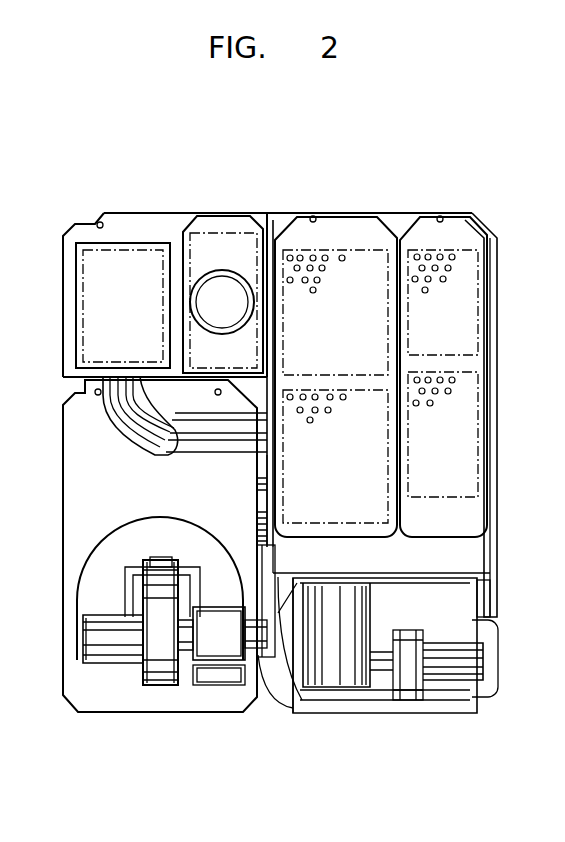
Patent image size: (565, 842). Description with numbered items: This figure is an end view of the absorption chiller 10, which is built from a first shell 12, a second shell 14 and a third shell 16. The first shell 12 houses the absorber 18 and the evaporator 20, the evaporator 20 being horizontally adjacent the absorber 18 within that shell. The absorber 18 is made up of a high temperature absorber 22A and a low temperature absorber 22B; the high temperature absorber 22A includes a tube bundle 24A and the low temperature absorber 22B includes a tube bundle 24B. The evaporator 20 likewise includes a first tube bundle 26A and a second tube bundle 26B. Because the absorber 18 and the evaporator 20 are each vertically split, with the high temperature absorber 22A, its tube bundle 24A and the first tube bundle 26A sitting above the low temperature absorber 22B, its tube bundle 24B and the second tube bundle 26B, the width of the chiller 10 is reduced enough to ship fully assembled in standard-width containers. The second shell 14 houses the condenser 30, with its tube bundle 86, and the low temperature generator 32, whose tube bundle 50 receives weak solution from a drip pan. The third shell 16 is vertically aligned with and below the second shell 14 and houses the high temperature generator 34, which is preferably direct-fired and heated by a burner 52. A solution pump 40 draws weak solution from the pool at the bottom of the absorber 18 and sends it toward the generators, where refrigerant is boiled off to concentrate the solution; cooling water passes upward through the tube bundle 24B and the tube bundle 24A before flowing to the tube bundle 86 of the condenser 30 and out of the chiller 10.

The chiller 10 is at (290, 212).
The first shell 12 is at (495, 547).
The second shell 14 is at (188, 232).
The third shell 16 is at (63, 472).
The absorber 18 is at (350, 236).
The evaporator 20 is at (480, 228).
The high temperature absorber 22A is at (381, 245).
The low temperature absorber 22B is at (385, 390).
The tube bundle 24A is at (318, 293).
The tube bundle 24B is at (320, 423).
The first tube bundle 26A is at (447, 284).
The second tube bundle 26B is at (449, 402).
The condenser 30 is at (230, 226).
The low temperature generator 32 is at (78, 300).
The high temperature generator 34 is at (95, 592).
The solution pump 40 is at (485, 656).
The tube bundle 50 is at (136, 320).
The burner 52 is at (163, 688).
The tube bundle 86 is at (236, 365).